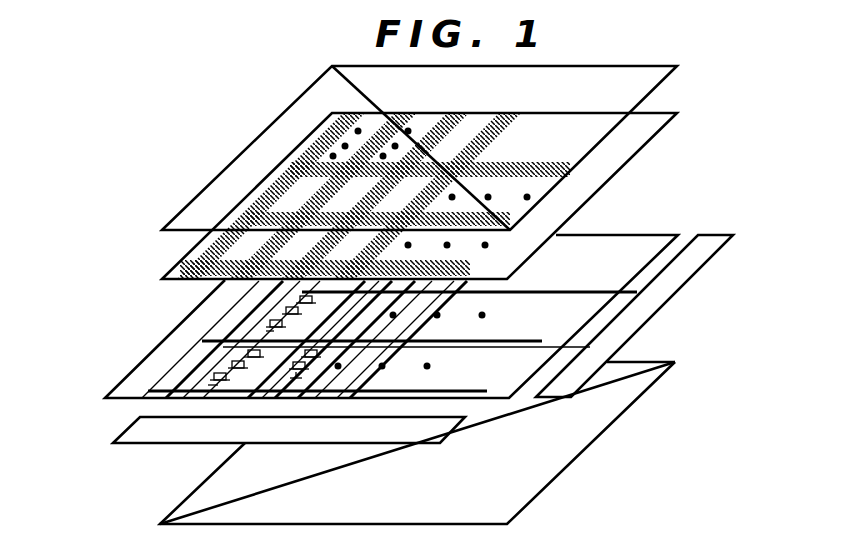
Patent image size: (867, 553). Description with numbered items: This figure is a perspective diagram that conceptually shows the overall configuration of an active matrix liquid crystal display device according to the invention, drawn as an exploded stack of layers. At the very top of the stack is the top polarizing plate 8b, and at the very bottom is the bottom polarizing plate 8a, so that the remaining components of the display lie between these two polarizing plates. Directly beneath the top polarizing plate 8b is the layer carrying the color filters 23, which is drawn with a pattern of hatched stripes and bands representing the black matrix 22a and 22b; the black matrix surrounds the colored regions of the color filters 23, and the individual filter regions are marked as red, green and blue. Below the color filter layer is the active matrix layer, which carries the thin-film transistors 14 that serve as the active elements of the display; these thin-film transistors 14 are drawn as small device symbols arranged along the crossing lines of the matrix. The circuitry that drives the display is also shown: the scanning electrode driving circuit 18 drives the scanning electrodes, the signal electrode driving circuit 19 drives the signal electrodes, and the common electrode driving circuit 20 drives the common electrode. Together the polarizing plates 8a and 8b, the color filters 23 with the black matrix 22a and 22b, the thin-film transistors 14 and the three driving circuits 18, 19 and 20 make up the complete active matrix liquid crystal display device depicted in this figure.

The bottom polarizing plate 8a is at (503, 493).
The top polarizing plate 8b is at (642, 78).
The thin-film transistors 14 is at (233, 377).
The scanning electrode driving circuit 18 is at (142, 371).
The signal electrode driving circuit 19 is at (448, 423).
The common electrode driving circuit 20 is at (647, 303).
The black matrix 22a is at (217, 240).
The black matrix 22b is at (217, 272).
The color filters 23 is at (585, 182).